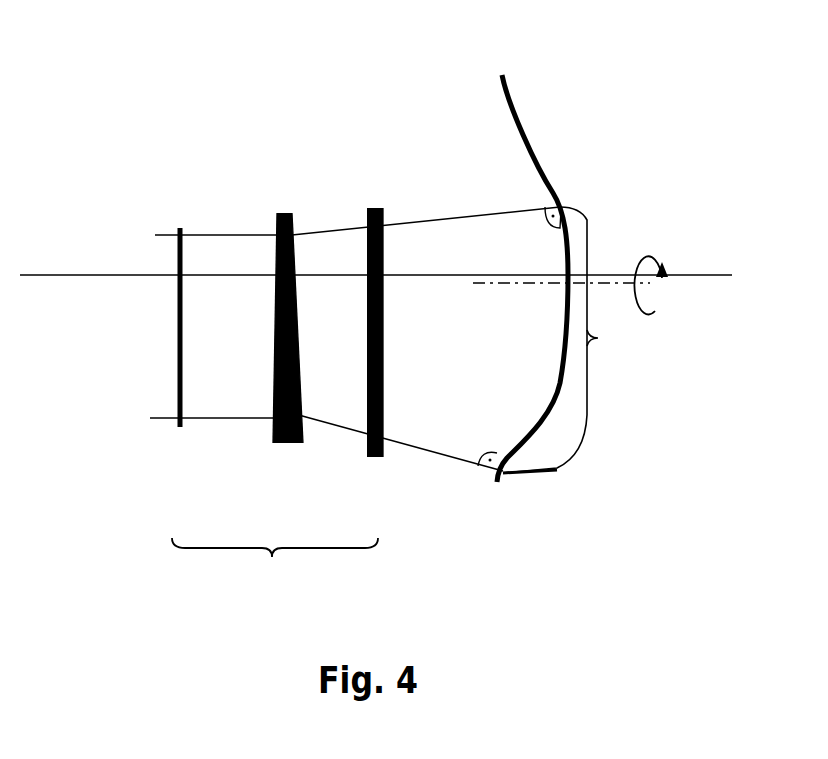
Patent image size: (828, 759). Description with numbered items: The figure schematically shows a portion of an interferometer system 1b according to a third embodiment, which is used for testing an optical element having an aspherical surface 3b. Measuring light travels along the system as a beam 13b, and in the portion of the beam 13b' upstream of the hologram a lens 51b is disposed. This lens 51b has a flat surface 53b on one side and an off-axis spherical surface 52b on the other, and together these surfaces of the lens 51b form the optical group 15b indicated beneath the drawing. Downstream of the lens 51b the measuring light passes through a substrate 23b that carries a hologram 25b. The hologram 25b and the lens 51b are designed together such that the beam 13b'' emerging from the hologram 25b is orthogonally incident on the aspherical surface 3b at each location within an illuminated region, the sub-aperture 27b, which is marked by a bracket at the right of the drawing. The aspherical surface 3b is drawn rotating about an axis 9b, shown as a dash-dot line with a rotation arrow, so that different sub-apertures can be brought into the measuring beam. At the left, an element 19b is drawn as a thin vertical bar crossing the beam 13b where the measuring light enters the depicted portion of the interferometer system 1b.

The interferometer system 1b is at (226, 86).
The aspherical surface 3b is at (500, 90).
The axis of rotation 9b is at (597, 283).
The housing wall 13b is at (221, 296).
The beam of measuring light 13b' is at (421, 175).
The beam emerging from the hologram 13b'' is at (399, 493).
The inlet section 15b is at (275, 577).
The inlet grid 19b is at (180, 228).
The substrate 23b is at (372, 209).
The hologram 25b is at (384, 218).
The sub-aperture 27b is at (572, 340).
The lens 51b is at (295, 443).
The off-axis spherical surface 52b is at (300, 412).
The flat surface 53b is at (273, 427).